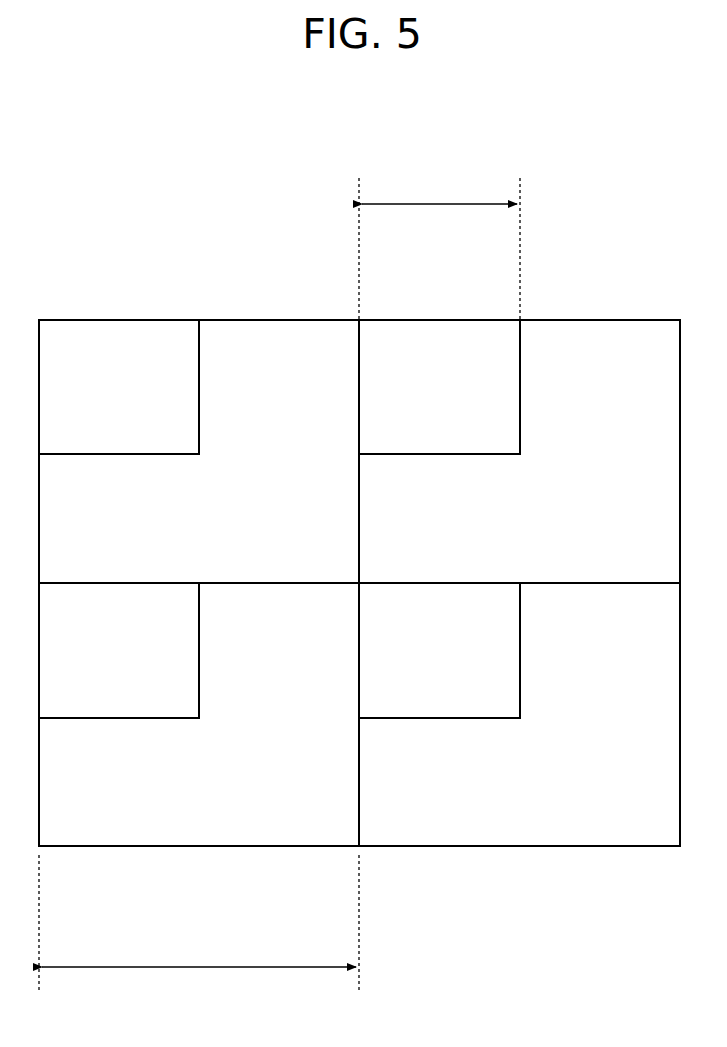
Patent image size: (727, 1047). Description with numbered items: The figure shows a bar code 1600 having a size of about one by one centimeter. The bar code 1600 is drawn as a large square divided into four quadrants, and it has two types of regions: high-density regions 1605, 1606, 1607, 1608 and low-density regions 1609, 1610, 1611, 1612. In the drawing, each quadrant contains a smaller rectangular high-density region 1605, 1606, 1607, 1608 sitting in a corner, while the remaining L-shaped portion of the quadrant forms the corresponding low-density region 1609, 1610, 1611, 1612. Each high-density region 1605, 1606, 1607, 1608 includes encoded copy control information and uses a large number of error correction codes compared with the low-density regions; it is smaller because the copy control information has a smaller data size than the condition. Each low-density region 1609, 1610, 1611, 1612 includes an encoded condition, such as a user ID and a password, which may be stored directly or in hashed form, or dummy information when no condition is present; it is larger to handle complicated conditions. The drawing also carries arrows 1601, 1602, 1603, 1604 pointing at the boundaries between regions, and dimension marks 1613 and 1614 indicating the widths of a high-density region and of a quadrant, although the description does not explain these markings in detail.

The bar code 1600 is at (394, 141).
The first notch boundary 1601 is at (219, 314).
The second notch boundary 1602 is at (551, 314).
The third notch boundary 1603 is at (183, 852).
The fourth notch boundary 1604 is at (509, 852).
The high-density region 1605 is at (62, 327).
The high-density region 1606 is at (392, 328).
The high-density region 1607 is at (98, 702).
The high-density region 1608 is at (422, 703).
The low-density region 1609 is at (292, 340).
The low-density region 1610 is at (622, 340).
The low-density region 1611 is at (280, 838).
The low-density region 1612 is at (602, 837).
The region width 1613 is at (439, 247).
The region pitch 1614 is at (199, 926).